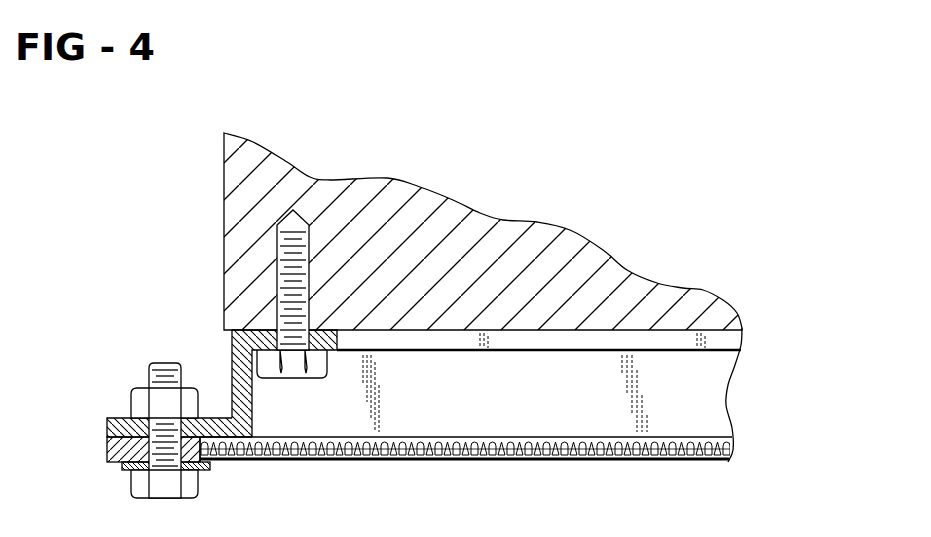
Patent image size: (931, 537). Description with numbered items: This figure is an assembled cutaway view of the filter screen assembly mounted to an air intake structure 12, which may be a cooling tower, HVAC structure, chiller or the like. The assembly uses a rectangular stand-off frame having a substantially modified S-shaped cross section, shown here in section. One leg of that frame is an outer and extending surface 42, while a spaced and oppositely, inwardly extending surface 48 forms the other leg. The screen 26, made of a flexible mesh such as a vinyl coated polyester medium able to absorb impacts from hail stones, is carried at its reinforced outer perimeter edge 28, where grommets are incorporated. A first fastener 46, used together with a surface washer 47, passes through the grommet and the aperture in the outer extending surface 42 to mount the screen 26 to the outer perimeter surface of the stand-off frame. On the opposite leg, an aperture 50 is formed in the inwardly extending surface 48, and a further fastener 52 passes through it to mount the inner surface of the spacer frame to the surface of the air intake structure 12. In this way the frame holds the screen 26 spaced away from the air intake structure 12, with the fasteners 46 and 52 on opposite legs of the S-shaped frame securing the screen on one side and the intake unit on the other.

The air intake structure 12 is at (386, 176).
The screen 26 is at (346, 460).
The reinforced outer perimeter edge 28 is at (110, 448).
The outer and extending surface 42 is at (110, 430).
The fasteners 46 is at (174, 454).
The surface washers 47 is at (210, 468).
The inwardly extending surface 48 is at (232, 342).
The apertures 50 is at (304, 352).
The fasteners 52 is at (283, 302).